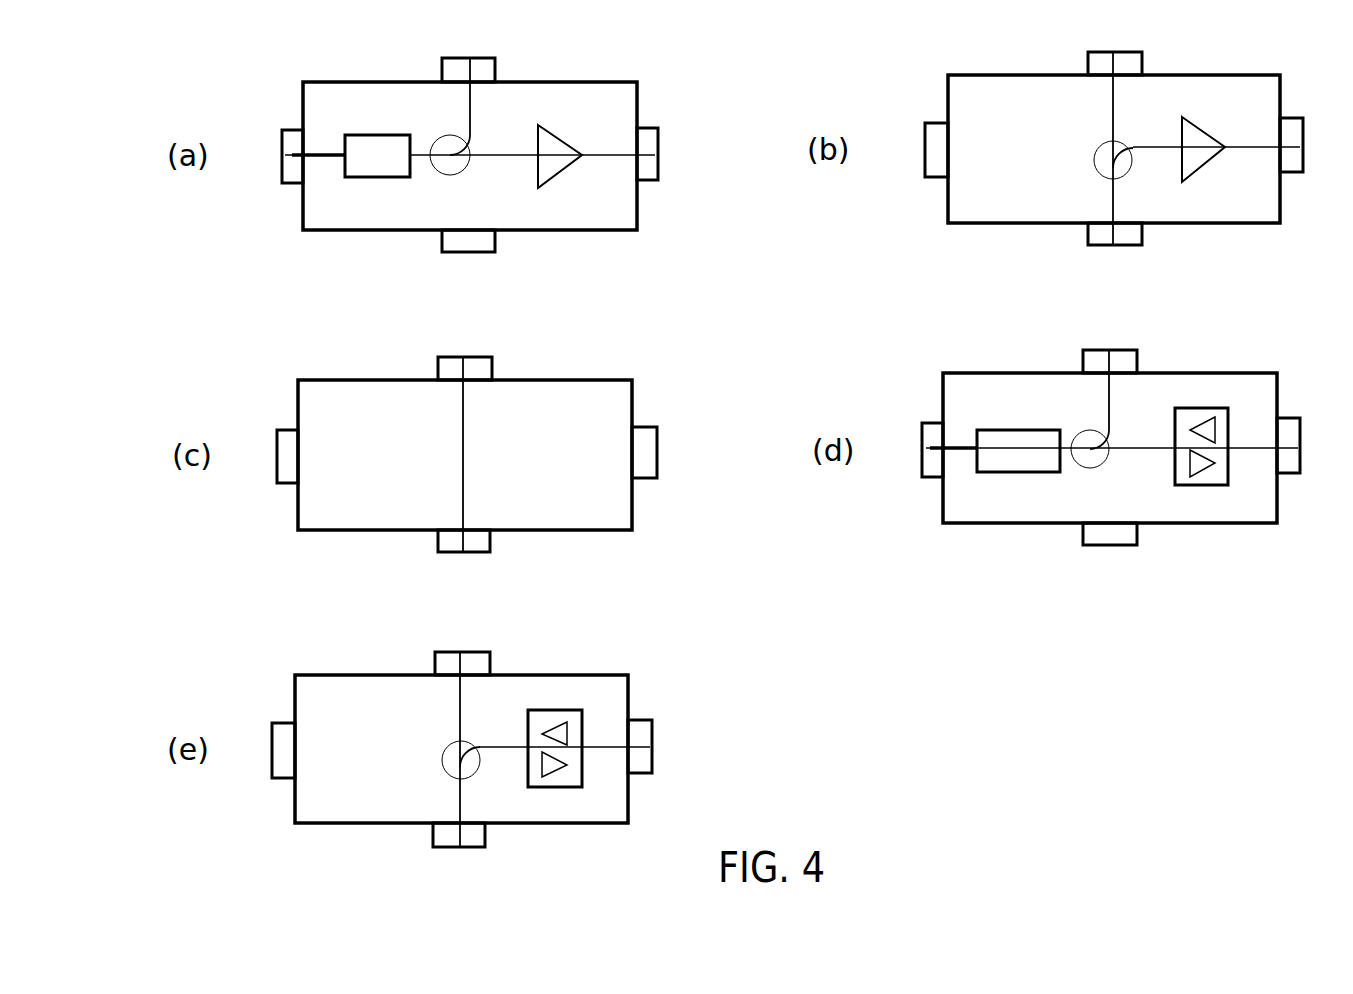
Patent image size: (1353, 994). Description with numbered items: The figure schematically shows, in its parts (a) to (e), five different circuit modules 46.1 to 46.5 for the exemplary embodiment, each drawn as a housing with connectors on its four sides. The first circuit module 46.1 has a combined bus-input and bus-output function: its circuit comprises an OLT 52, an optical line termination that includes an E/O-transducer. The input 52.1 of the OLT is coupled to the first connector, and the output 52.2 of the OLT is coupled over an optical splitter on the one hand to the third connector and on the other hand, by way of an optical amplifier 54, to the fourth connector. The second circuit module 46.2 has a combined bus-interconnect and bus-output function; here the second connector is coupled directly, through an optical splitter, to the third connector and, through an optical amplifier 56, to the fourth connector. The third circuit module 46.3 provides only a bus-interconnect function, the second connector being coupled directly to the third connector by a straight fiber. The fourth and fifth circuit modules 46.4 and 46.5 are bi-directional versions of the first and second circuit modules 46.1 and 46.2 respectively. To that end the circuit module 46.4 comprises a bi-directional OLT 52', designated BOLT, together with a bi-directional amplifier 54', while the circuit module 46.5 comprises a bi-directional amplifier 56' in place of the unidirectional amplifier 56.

The first circuit module 46.1 is at (585, 78).
The second circuit module 46.2 is at (1232, 72).
The third circuit module 46.3 is at (593, 377).
The fourth circuit module 46.4 is at (1218, 370).
The fifth circuit module 46.5 is at (557, 665).
The OLT (Optical Line Termination) 52 is at (373, 179).
The bi-directional OLT (BOLT) 52' is at (1018, 471).
The input of the OLT 52.1 is at (298, 117).
The output of the OLT 52.2 is at (422, 153).
The optical amplifier 54 is at (569, 174).
The bi-directional amplifier 54' is at (1222, 463).
The optical amplifier 56 is at (1217, 164).
The bi-directional amplifier 56' is at (573, 766).